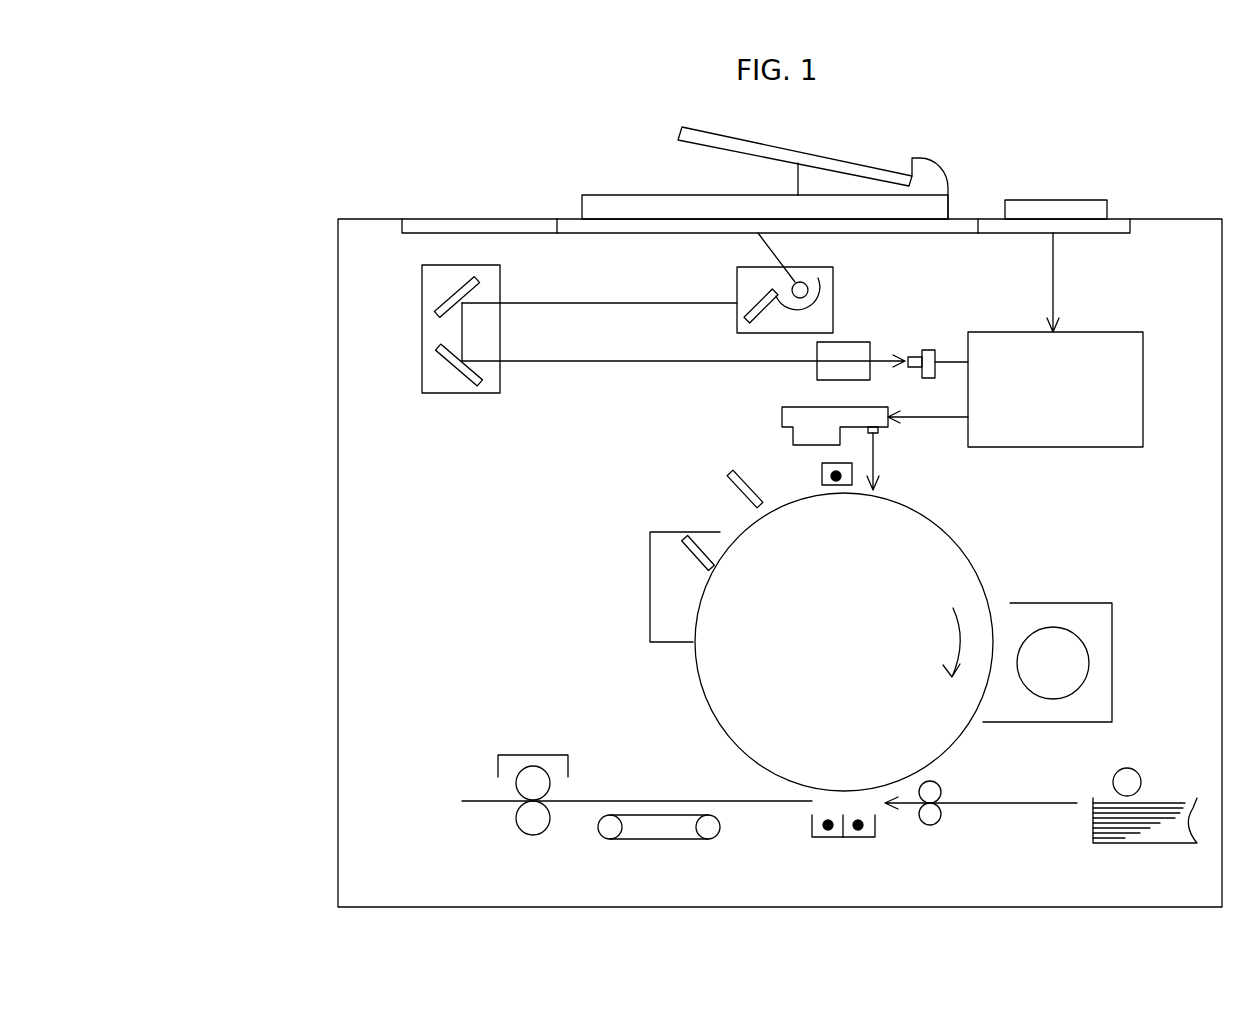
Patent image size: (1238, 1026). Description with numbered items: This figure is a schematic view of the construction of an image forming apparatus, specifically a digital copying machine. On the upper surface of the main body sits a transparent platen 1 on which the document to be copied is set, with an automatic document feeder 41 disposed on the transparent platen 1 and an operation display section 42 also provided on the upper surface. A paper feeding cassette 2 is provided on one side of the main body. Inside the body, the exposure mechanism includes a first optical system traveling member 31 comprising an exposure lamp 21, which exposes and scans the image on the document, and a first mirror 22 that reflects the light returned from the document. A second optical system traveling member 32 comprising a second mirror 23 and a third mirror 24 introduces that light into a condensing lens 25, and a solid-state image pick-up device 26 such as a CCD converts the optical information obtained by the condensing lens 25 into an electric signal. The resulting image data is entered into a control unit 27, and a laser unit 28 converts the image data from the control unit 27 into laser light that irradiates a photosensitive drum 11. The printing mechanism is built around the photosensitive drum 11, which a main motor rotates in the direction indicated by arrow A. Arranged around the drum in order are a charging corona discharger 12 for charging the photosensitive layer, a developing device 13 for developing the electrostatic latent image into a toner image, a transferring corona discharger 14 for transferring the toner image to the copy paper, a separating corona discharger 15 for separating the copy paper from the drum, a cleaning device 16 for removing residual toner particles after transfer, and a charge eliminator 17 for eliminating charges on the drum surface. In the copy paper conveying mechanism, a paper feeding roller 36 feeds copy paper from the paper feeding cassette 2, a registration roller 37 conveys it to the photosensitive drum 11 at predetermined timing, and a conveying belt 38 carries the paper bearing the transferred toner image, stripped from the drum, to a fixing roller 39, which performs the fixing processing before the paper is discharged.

The transparent platen 1 is at (563, 219).
The automatic document feeder 41 is at (945, 173).
The operation display section 42 is at (1075, 200).
The second optical system traveling member 32 is at (422, 326).
The second mirror 23 is at (445, 310).
The third mirror 24 is at (455, 368).
The first optical system traveling member 31 is at (833, 282).
The exposure lamp 21 is at (822, 312).
The first mirror 22 is at (770, 332).
The condensing lens 25 is at (815, 370).
The solid-state image pick-up device 26 is at (928, 352).
The control unit 27 is at (1105, 332).
The laser unit 28 is at (782, 447).
The charging corona discharger 12 is at (822, 474).
The charge eliminator 17 is at (728, 478).
The photosensitive drum 11 is at (955, 540).
The arrow A is at (957, 632).
The cleaning device 16 is at (650, 568).
The developing device 13 is at (1112, 626).
The paper feeding roller 36 is at (1128, 768).
The paper feeding cassette 2 is at (1120, 845).
The registration roller 37 is at (930, 826).
The separating corona discharger 15 is at (827, 838).
The transferring corona discharger 14 is at (858, 838).
The conveying belt 38 is at (643, 840).
The fixing roller 39 is at (515, 821).